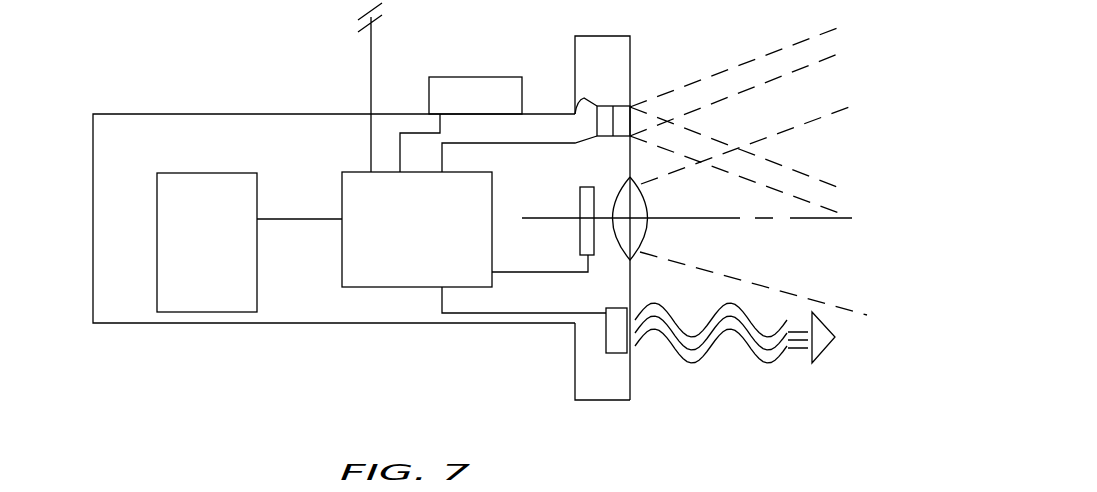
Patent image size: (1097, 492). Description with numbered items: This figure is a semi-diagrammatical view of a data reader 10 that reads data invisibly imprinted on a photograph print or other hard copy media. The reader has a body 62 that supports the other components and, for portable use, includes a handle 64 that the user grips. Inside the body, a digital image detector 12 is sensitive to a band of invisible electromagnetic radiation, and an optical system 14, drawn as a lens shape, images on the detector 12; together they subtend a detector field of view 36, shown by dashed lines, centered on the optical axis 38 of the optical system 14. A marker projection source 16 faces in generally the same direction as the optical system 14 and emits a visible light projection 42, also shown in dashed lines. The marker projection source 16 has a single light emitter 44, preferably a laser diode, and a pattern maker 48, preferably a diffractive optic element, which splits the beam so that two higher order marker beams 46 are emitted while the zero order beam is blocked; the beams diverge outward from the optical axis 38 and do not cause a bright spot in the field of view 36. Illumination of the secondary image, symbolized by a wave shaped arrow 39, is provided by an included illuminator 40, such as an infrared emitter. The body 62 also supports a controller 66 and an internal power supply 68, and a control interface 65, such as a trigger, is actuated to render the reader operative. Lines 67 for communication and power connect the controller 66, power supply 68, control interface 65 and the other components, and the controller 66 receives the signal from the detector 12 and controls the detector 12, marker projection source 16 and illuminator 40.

The data reader 10 is at (217, 333).
The digital image detector 12 is at (585, 187).
The optical system 14 is at (641, 204).
The marker projection source 16 is at (613, 100).
The detector field of view 36 is at (826, 113).
The optical axis 38 is at (571, 218).
The wave shaped arrow 39 is at (760, 358).
The illuminator 40 is at (617, 353).
The visible light projection 42 is at (712, 138).
The emitter 44 is at (574, 108).
The marker beam 46 is at (767, 53).
The pattern maker 48 is at (621, 107).
The body 62 is at (613, 400).
The handle 64 is at (192, 113).
The control interface 65 is at (473, 77).
The controller 66 is at (400, 287).
The lines 67 is at (365, 53).
The power supply 68 is at (225, 172).